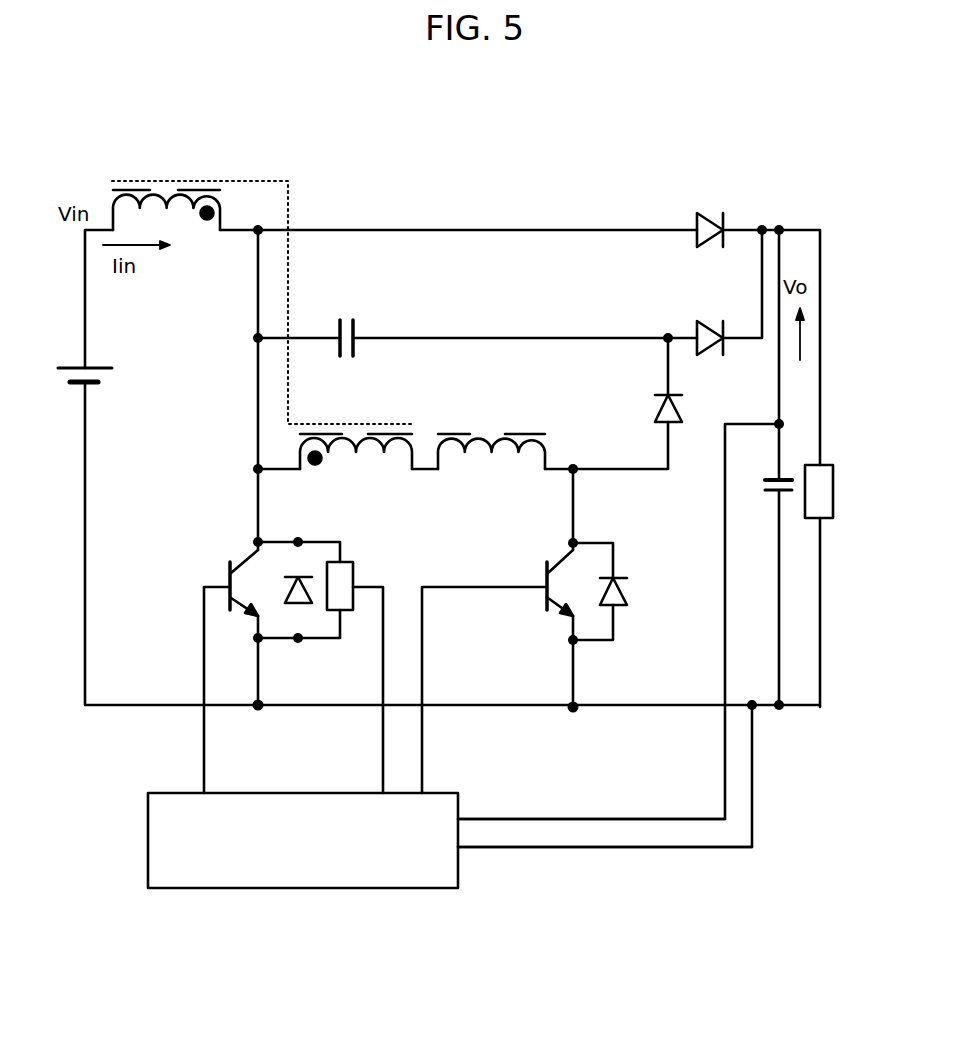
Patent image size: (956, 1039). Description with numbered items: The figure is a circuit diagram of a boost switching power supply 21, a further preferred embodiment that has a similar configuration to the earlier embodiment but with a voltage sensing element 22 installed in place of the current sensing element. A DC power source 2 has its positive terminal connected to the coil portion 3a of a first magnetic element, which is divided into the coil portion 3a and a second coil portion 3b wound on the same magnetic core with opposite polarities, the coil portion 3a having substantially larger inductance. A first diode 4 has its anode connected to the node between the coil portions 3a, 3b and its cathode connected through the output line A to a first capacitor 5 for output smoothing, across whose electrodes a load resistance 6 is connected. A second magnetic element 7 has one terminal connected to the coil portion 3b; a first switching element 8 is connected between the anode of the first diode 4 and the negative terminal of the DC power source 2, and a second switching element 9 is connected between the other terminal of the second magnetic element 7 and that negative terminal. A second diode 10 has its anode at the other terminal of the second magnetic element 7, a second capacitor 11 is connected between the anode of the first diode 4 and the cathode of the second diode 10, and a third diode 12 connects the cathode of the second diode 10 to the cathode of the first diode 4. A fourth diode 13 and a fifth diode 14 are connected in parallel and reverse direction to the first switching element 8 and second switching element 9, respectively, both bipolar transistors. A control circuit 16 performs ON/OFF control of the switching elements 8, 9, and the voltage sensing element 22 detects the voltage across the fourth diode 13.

The main power line A is at (339, 230).
The DC power source 2 is at (90, 372).
The coil portion 3a is at (175, 178).
The second coil portion 3b is at (345, 424).
The first diode 4 is at (712, 222).
The first capacitor 5 is at (770, 492).
The load resistance 6 is at (833, 490).
The second magnetic element 7 is at (478, 434).
The first switching element 8 is at (228, 575).
The second switching element 9 is at (545, 575).
The second diode 10 is at (683, 408).
The second capacitor 11 is at (355, 330).
The third diode 12 is at (705, 323).
The fourth diode 13 is at (307, 572).
The fifth diode 14 is at (620, 575).
The control circuit 16 is at (440, 787).
The boost switching power supply 21 is at (580, 858).
The voltage sensing element 22 is at (357, 572).